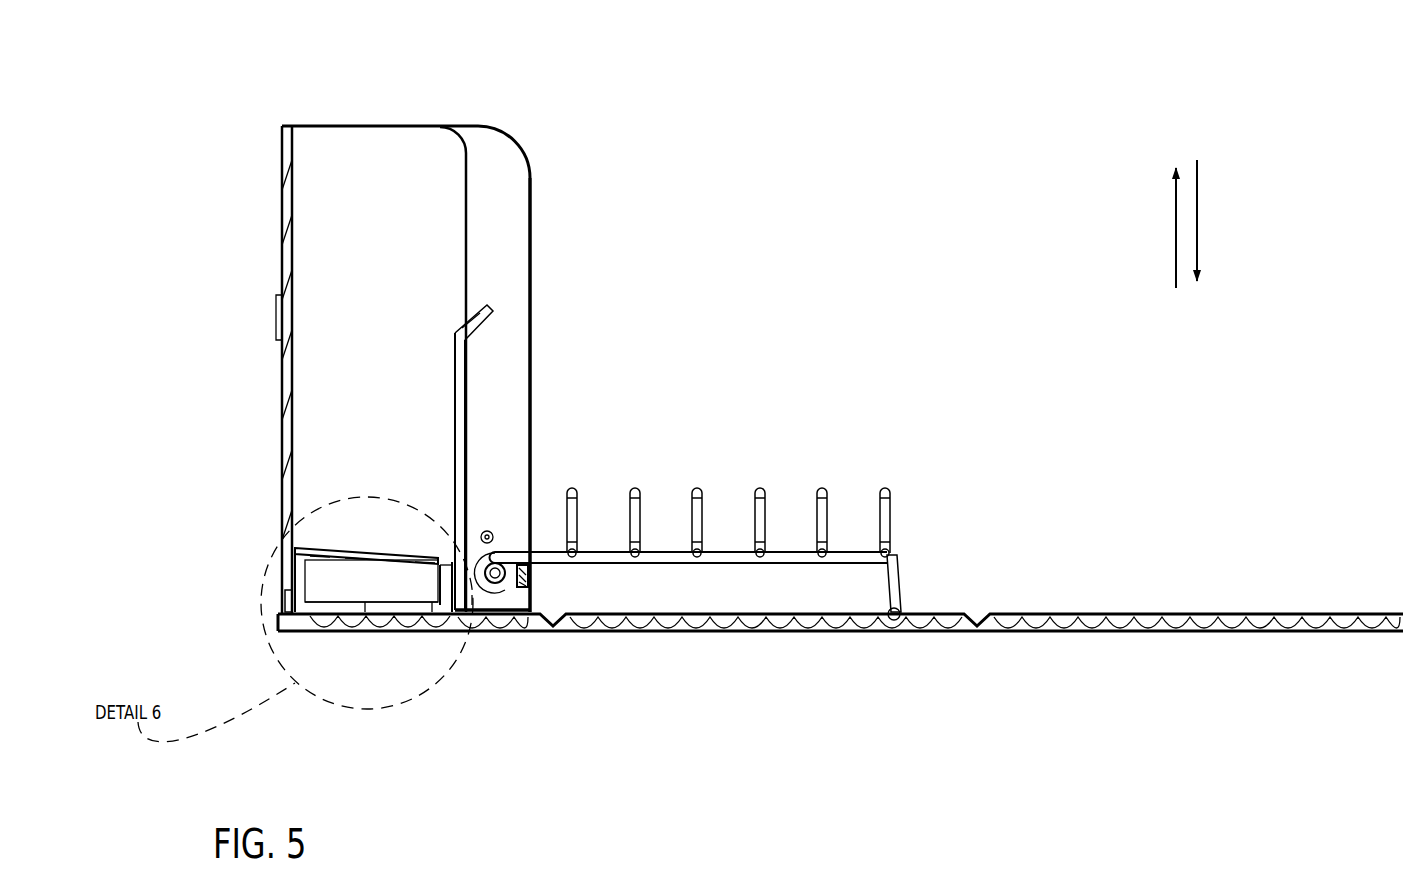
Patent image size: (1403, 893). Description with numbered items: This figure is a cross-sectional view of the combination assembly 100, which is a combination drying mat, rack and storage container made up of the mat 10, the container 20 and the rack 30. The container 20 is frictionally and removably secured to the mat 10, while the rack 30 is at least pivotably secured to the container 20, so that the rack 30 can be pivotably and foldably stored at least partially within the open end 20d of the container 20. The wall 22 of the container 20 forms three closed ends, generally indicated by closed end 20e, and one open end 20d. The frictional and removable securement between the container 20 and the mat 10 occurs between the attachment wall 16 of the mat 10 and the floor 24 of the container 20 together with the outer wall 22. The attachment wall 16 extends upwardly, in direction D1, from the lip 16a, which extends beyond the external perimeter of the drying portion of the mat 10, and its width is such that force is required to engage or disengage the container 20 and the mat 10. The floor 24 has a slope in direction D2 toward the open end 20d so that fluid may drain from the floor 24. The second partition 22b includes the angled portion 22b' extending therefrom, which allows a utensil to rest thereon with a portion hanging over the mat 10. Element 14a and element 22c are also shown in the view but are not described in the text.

The mat 10 is at (1288, 478).
The base panel 14a is at (1148, 582).
The attachment wall 16 is at (440, 588).
The lip 16a is at (287, 608).
The container 20 is at (582, 133).
The open end 20d is at (565, 330).
The closed end 20e is at (198, 223).
The wall 22 is at (530, 235).
The second partition 22b is at (565, 457).
The angled portion 22b' is at (544, 357).
The cover top wall 22c is at (375, 160).
The floor 24 is at (380, 558).
The rack 30 is at (837, 452).
The combination assembly 100 is at (947, 200).
The direction D1 is at (1176, 210).
The direction D2 is at (1197, 245).